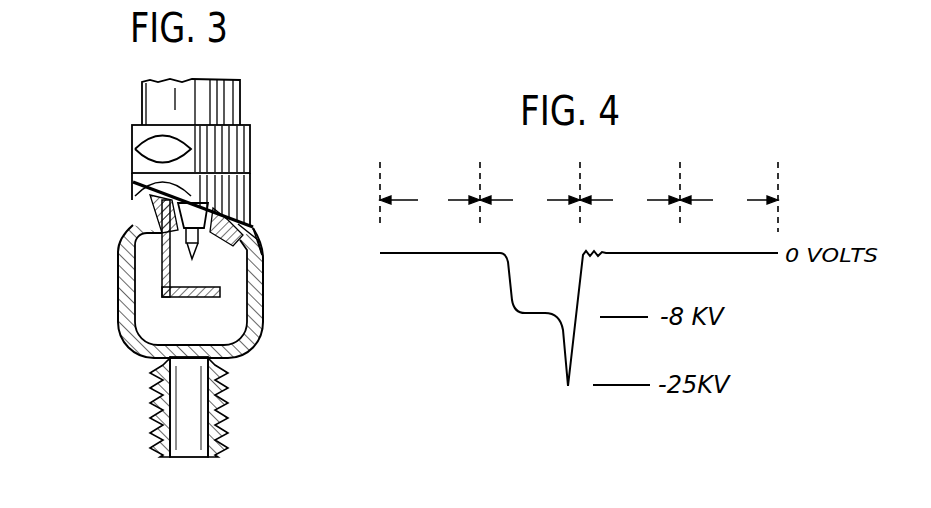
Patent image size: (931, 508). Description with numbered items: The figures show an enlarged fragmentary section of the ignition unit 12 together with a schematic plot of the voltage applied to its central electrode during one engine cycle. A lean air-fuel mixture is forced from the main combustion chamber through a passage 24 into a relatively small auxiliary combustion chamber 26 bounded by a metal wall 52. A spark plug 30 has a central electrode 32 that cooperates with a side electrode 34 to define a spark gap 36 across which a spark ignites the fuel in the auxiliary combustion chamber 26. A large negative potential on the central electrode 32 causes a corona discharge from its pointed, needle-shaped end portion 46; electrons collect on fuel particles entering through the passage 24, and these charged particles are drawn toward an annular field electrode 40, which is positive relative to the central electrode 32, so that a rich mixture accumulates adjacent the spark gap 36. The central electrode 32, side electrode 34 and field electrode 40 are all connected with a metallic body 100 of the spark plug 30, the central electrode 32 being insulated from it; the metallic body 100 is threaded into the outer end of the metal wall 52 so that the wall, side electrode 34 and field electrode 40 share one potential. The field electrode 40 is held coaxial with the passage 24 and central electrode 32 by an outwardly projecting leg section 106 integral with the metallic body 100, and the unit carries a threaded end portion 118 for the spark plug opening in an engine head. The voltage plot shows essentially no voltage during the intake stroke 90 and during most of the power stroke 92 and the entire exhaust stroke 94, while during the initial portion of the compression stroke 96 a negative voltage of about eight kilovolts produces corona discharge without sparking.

In FIG. 3, the ignition unit 12 is at (292, 118).
In FIG. 3, the passage 24 is at (186, 375).
In FIG. 3, the auxiliary combustion chamber 26 is at (232, 318).
In FIG. 3, the spark plug 30 is at (150, 100).
In FIG. 3, the central electrode 32 is at (185, 209).
In FIG. 3, the side electrode 34 is at (240, 244).
In FIG. 3, the spark gap 36 is at (228, 220).
In FIG. 3, the field electrode 40 is at (195, 299).
In FIG. 3, the end portion 46 is at (192, 257).
In FIG. 3, the metal wall 52 is at (265, 272).
In FIG. 3, the metallic body 100 is at (150, 202).
In FIG. 3, the leg section 106 is at (160, 266).
In FIG. 3, the threaded end portion 118 is at (230, 418).
In FIG. 4, the intake stroke 90 is at (430, 195).
In FIG. 4, the power stroke 92 is at (630, 195).
In FIG. 4, the exhaust stroke 94 is at (729, 197).
In FIG. 4, the compression stroke initial portion 96 is at (530, 195).